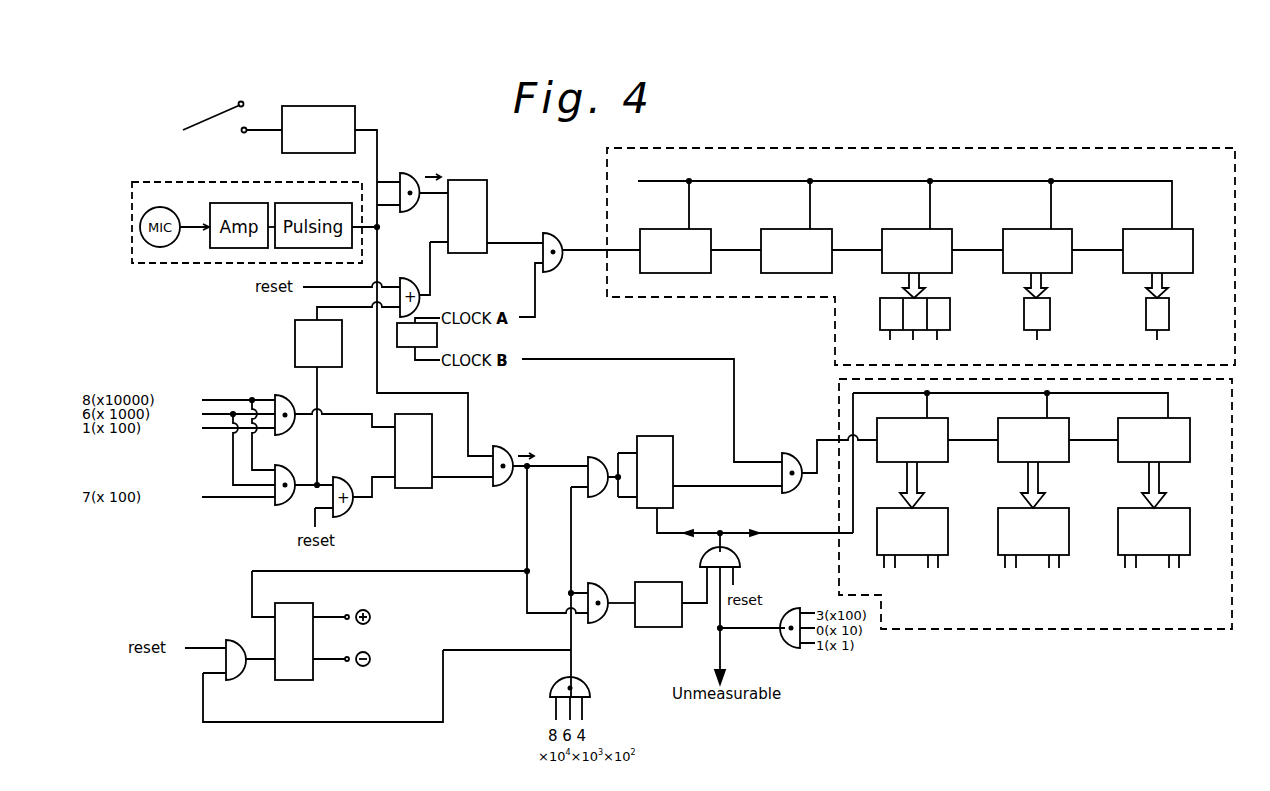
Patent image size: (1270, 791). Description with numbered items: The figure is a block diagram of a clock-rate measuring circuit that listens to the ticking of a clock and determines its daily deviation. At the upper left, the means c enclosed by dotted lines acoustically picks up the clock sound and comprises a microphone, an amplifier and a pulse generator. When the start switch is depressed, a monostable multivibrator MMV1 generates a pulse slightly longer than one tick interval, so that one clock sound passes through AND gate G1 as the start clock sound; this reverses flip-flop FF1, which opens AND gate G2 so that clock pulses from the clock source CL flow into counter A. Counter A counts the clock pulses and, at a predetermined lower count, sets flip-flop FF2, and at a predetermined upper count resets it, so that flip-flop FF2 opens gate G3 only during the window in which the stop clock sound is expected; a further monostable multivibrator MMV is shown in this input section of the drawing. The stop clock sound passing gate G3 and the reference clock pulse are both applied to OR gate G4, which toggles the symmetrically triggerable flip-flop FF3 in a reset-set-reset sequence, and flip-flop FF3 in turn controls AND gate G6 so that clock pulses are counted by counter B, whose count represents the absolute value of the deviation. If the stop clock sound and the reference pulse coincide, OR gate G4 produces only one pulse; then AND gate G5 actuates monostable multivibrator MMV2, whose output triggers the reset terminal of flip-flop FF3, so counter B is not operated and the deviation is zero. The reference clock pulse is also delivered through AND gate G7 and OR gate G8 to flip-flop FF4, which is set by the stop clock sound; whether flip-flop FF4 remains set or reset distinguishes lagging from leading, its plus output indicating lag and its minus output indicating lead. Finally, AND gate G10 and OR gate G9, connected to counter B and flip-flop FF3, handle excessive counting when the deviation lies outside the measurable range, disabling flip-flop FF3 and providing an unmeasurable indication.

The AND gate G1 is at (409, 181).
The AND gate G2 is at (548, 242).
The gate G3 is at (498, 456).
The OR gate G4 is at (590, 462).
The AND gate G5 is at (594, 592).
The AND gate G6 is at (786, 460).
The AND gate G7 is at (578, 676).
The OR gate G8 is at (233, 650).
The OR gate G9 is at (731, 554).
The AND gate G10 is at (795, 616).
The monostable multivibrator MMV1 is at (318, 129).
The monostable multivibrator MMV is at (318, 343).
The monostable multivibrator MMV2 is at (658, 604).
The flip-flop FF1 is at (467, 217).
The flip-flop FF2 is at (413, 451).
The flip-flop FF3 is at (655, 472).
The flip-flop FF4 is at (294, 641).
The clock pulse generator CL is at (417, 335).
The counter A is at (1184, 149).
The counter B is at (1197, 629).
The acoustic pickup means c is at (146, 191).